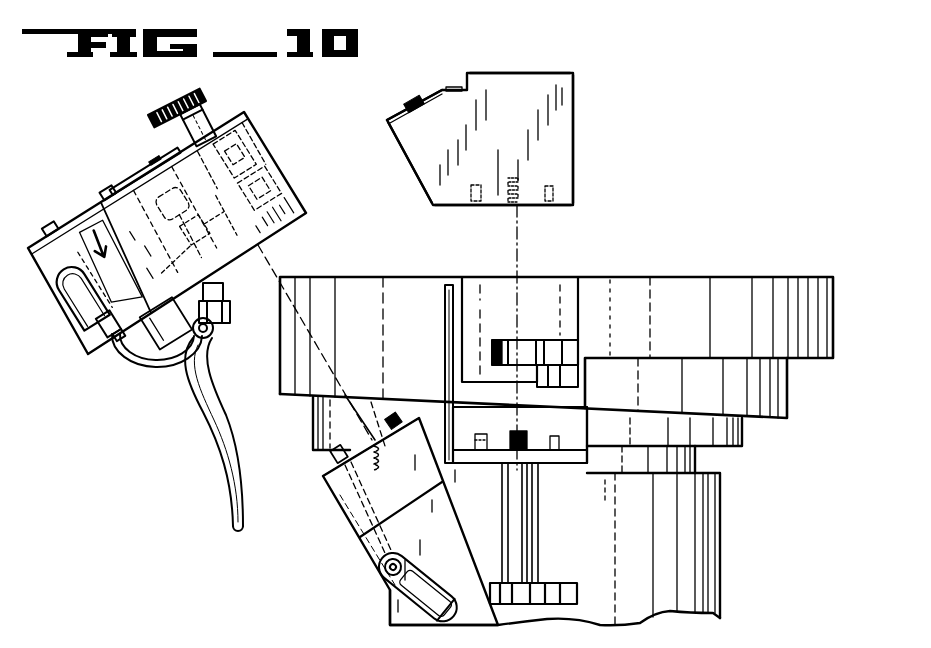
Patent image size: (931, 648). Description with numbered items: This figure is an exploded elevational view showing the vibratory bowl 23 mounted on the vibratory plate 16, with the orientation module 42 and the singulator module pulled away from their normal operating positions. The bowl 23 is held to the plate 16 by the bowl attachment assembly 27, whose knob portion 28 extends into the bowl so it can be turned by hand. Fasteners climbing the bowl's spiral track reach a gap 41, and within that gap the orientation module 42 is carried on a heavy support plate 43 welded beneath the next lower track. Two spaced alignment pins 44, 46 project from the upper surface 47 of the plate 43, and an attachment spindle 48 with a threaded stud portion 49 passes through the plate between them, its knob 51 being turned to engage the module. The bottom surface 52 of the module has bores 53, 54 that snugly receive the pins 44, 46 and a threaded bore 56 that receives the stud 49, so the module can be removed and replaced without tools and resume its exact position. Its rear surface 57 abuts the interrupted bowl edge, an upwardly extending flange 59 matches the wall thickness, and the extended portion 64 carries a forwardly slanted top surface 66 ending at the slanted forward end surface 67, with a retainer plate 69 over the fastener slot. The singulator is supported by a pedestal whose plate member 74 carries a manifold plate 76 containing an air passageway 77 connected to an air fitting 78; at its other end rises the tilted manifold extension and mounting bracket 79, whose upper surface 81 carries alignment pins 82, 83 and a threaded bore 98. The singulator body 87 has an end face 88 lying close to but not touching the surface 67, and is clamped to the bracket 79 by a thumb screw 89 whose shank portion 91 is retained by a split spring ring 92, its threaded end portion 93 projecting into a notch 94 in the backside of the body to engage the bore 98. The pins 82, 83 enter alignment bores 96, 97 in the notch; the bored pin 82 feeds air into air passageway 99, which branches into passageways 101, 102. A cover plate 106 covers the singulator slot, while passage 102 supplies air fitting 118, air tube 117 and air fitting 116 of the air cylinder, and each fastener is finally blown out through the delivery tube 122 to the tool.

The vibratory plate 16 is at (698, 461).
The vibratory bowl 23 is at (660, 269).
The bowl attachment assembly 27 is at (539, 330).
The knob portion 28 is at (494, 350).
The gap 41 is at (577, 290).
The orientation module 42 is at (601, 82).
The support plate 43 is at (488, 465).
The alignment pin 44 is at (480, 434).
The alignment pin 46 is at (560, 437).
The upper surface 47 is at (540, 464).
The orientation module attachment spindle 48 is at (537, 553).
The threaded stud portion 49 is at (527, 442).
The knob 51 is at (580, 591).
The bottom surface 52 is at (461, 208).
The bore 53 is at (476, 183).
The bore 54 is at (546, 186).
The threaded bore 56 is at (508, 208).
The rear surface 57 is at (578, 177).
The flange 59 is at (518, 78).
The extended portion 64 is at (405, 134).
The top surface 66 is at (428, 91).
The forward end surface 67 is at (418, 180).
The retainer plate 69 is at (450, 87).
The plate member 74 is at (490, 608).
The manifold plate 76 is at (366, 549).
The air passageway 77 is at (400, 536).
The air fitting 78 is at (388, 585).
The manifold extension and mounting bracket 79 is at (340, 501).
The upper surface 81 is at (326, 478).
The alignment pin 82 is at (333, 467).
The alignment pin 83 is at (398, 418).
The singulator module body 87 is at (273, 185).
The end face 88 is at (292, 197).
The thumb screw 89 is at (200, 94).
The shank portion 91 is at (201, 120).
The split spring ring 92 is at (236, 163).
The threaded end portion 93 is at (255, 207).
The notch 94 is at (200, 240).
The alignment bore 96 is at (192, 242).
The alignment bore 97 is at (262, 143).
The threaded bore 98 is at (372, 433).
The air passageway 99 is at (168, 183).
The air passageway 101 is at (115, 290).
The air passageway 102 is at (181, 253).
The cover plate 106 is at (141, 166).
The air fitting 116 is at (82, 331).
The air tube 117 is at (148, 364).
The air fitting 118 is at (225, 292).
The delivery tube 122 is at (212, 440).